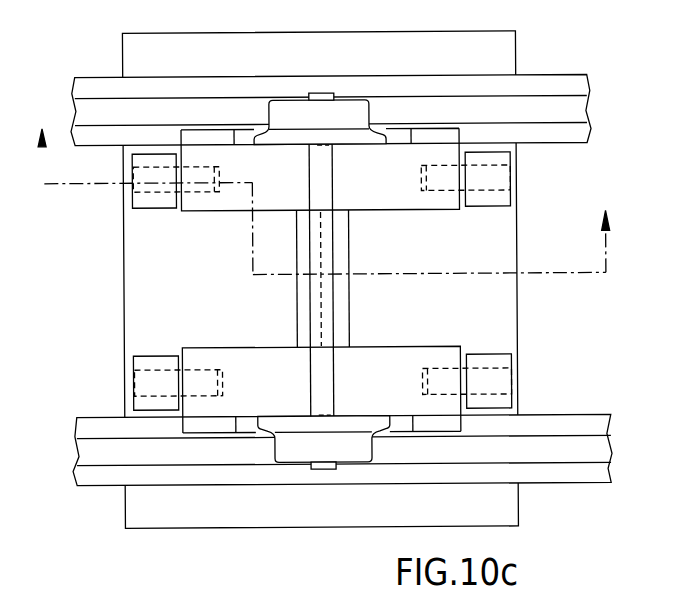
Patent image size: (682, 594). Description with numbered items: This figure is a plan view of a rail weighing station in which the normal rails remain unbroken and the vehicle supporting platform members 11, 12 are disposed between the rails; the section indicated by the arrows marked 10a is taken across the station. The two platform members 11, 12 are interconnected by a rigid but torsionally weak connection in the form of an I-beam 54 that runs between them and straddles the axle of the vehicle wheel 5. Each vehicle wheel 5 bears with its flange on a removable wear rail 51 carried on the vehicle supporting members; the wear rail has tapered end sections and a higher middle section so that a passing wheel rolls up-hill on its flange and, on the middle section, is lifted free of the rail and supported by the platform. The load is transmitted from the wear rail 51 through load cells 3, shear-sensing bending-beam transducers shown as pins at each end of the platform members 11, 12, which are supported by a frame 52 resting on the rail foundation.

The load cells 3 is at (181, 185).
The vehicle wheel 5 is at (352, 107).
The platform member 11 is at (400, 207).
The platform member 12 is at (382, 358).
The removable wear rail 51 is at (394, 135).
The frame 52 is at (467, 40).
The I-beam 54 is at (345, 308).
The section line 10a is at (325, 188).